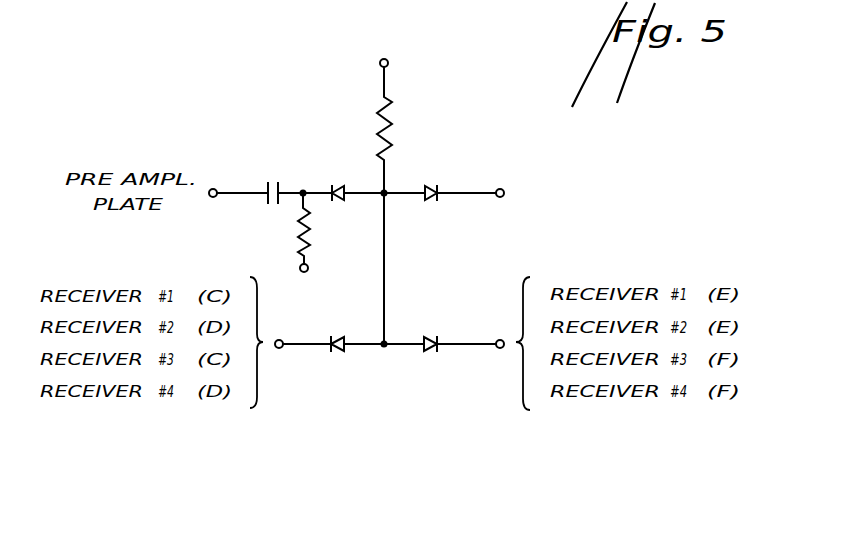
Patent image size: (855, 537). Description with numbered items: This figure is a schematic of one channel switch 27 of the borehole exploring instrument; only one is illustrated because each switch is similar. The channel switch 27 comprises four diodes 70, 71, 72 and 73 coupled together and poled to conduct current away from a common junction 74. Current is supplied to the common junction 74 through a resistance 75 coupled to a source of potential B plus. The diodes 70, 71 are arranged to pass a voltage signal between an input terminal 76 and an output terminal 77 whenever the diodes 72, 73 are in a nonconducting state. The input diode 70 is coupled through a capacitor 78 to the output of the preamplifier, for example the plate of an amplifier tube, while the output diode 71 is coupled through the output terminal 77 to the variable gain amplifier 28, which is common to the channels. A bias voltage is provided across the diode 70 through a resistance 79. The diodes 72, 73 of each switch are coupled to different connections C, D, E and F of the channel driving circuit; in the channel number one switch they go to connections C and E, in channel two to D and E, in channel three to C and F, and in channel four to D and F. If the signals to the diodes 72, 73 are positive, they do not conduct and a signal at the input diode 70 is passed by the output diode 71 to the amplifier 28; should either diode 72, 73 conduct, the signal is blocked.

The channel switch 27 is at (377, 259).
The variable gain amplifier 28 is at (647, 192).
The diode 70 is at (338, 187).
The diode 71 is at (433, 183).
The diode 72 is at (338, 355).
The diode 73 is at (432, 357).
The common junction 74 is at (384, 262).
The resistance 75 is at (372, 118).
The input terminal 76 is at (218, 187).
The output terminal 77 is at (499, 186).
The capacitor 78 is at (271, 180).
The resistance 79 is at (297, 225).